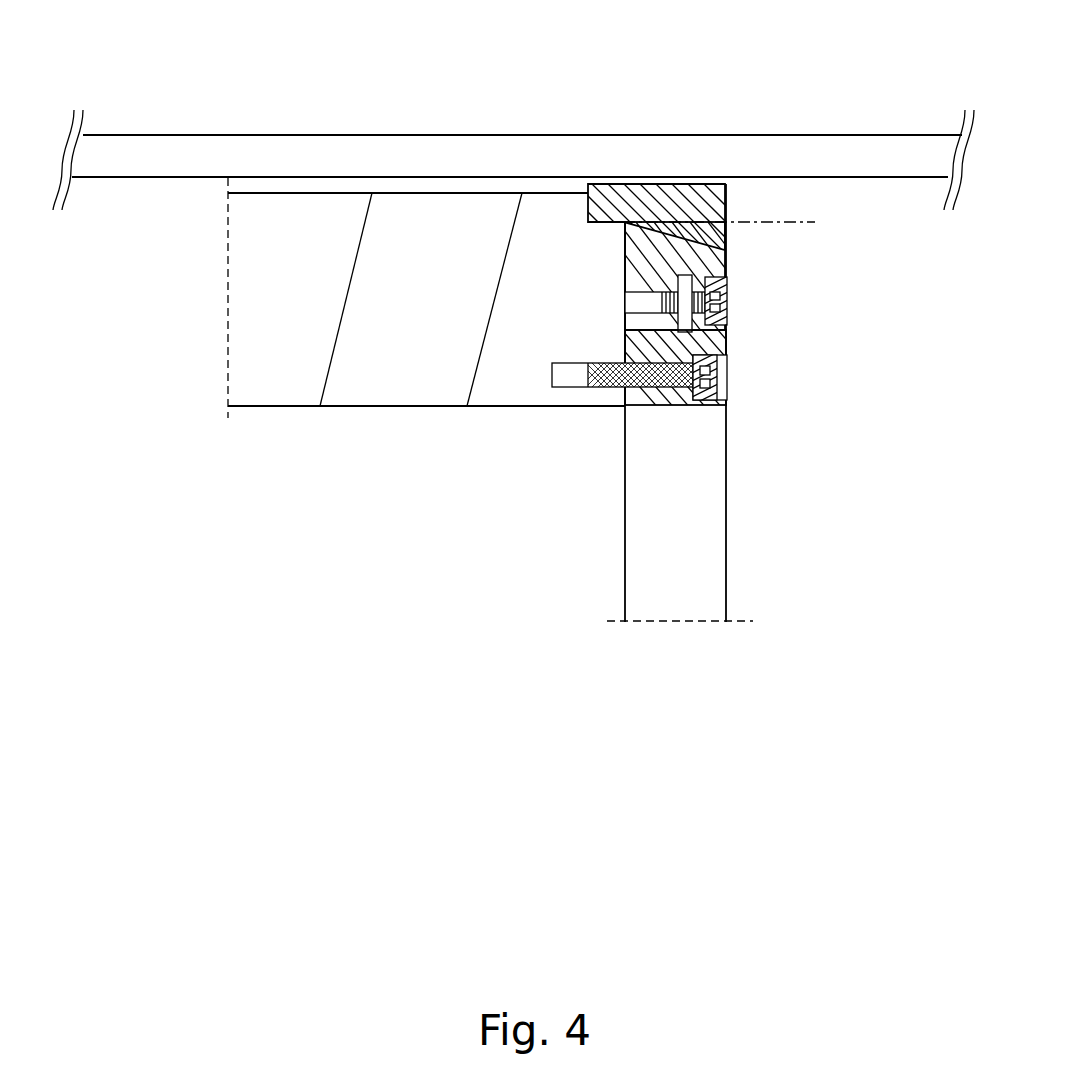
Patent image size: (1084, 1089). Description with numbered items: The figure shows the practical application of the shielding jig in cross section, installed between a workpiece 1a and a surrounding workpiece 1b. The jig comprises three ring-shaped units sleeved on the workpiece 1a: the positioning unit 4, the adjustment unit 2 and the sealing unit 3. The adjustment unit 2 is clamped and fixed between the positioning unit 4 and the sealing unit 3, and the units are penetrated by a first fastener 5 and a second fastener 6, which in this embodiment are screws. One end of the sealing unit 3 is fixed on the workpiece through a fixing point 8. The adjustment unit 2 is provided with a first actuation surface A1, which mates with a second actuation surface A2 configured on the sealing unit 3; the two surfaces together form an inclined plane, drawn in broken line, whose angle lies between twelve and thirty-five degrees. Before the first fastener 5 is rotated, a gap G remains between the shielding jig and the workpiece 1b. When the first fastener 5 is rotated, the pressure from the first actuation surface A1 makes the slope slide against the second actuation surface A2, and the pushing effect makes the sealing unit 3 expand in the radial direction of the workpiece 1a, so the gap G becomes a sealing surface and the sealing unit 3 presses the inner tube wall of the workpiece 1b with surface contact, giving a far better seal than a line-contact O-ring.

The workpiece 1a is at (412, 247).
The workpiece 1b is at (228, 162).
The adjustment unit 2 is at (697, 259).
The sealing unit 3 is at (659, 184).
The positioning unit 4 is at (730, 341).
The first fastener 5 is at (735, 262).
The second fastener 6 is at (727, 393).
The fixing point 8 is at (596, 184).
The gap G is at (690, 180).
The first actuation surface A1 is at (783, 165).
The second actuation surface A2 is at (725, 250).